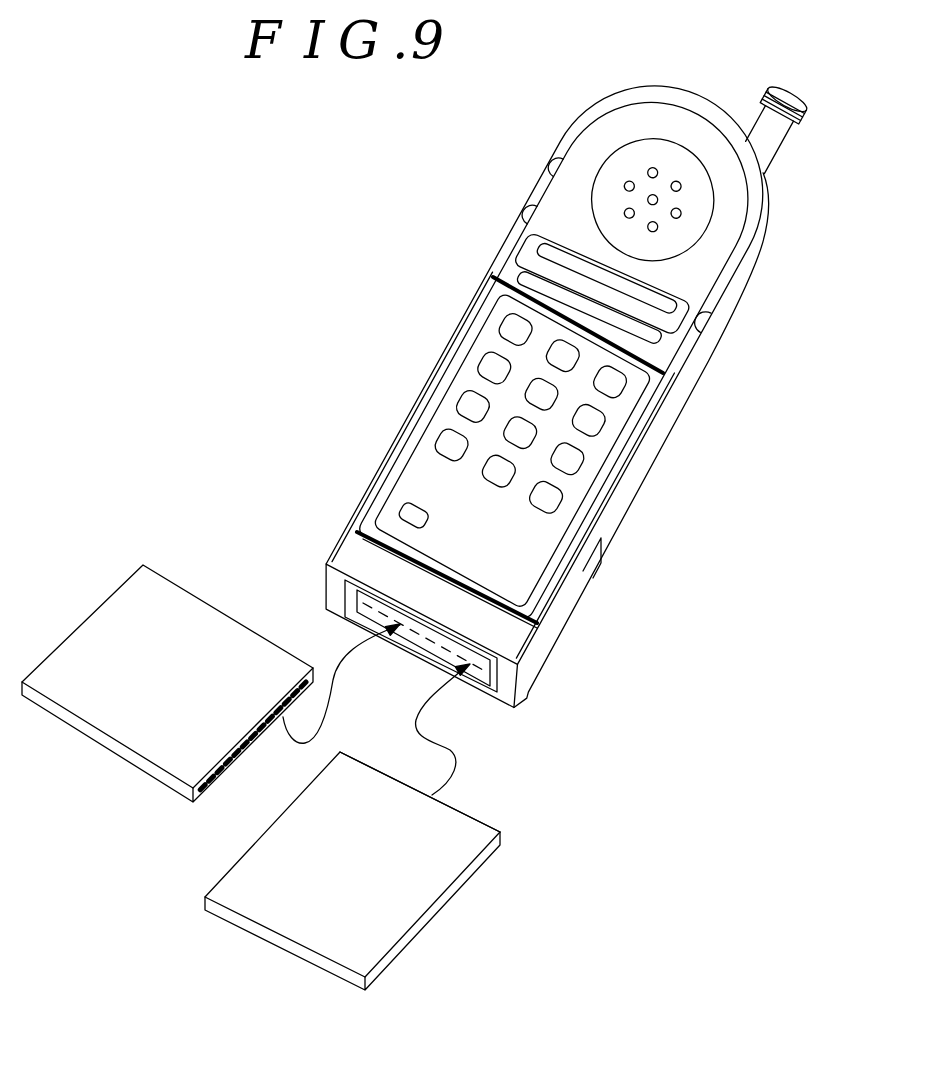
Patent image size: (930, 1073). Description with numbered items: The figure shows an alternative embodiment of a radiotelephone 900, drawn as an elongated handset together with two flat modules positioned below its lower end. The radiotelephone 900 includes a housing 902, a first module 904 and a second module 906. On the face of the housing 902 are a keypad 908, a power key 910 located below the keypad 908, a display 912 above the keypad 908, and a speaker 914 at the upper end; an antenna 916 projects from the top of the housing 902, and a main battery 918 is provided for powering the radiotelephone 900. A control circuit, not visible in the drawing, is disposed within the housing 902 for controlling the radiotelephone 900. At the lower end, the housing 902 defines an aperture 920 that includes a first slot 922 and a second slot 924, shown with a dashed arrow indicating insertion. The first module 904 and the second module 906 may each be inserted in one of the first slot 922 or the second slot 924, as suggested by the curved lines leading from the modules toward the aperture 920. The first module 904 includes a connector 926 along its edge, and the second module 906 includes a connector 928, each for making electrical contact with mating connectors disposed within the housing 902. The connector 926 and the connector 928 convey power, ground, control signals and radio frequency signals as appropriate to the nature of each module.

The radiotelephone 900 is at (805, 814).
The housing 902 is at (672, 413).
The first module 904 is at (68, 718).
The second module 906 is at (413, 928).
The keypad 908 is at (465, 405).
The power key 910 is at (400, 510).
The display 912 is at (541, 252).
The speaker 914 is at (627, 158).
The antenna 916 is at (783, 148).
The main battery 918 is at (565, 610).
The aperture 920 is at (345, 592).
The first slot 922 is at (358, 598).
The second slot 924 is at (355, 613).
The connector 926 is at (238, 757).
The connector 928 is at (500, 833).